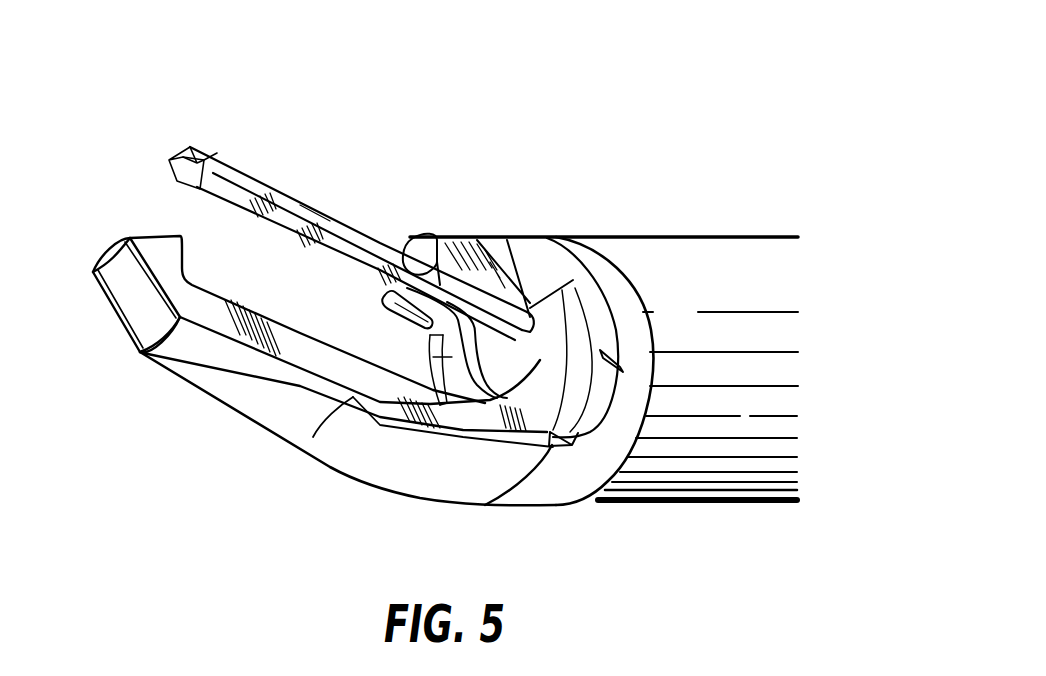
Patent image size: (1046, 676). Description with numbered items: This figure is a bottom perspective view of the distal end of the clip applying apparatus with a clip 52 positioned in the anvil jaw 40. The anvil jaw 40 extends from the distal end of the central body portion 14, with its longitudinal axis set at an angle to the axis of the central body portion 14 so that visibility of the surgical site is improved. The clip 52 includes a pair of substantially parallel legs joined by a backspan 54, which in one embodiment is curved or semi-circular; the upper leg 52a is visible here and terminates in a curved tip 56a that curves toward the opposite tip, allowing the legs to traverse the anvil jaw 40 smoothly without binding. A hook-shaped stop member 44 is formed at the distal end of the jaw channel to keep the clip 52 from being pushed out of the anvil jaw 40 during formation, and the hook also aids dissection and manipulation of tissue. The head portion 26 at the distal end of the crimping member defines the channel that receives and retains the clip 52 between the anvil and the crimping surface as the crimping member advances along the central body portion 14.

The central body portion 14 is at (703, 237).
The head portion 26 is at (512, 236).
The anvil jaw 40 is at (246, 395).
The stop member 44 is at (127, 279).
The clip 52 is at (254, 162).
The leg 52a is at (320, 217).
The backspan 54 is at (452, 357).
The curved tip 56a is at (197, 152).